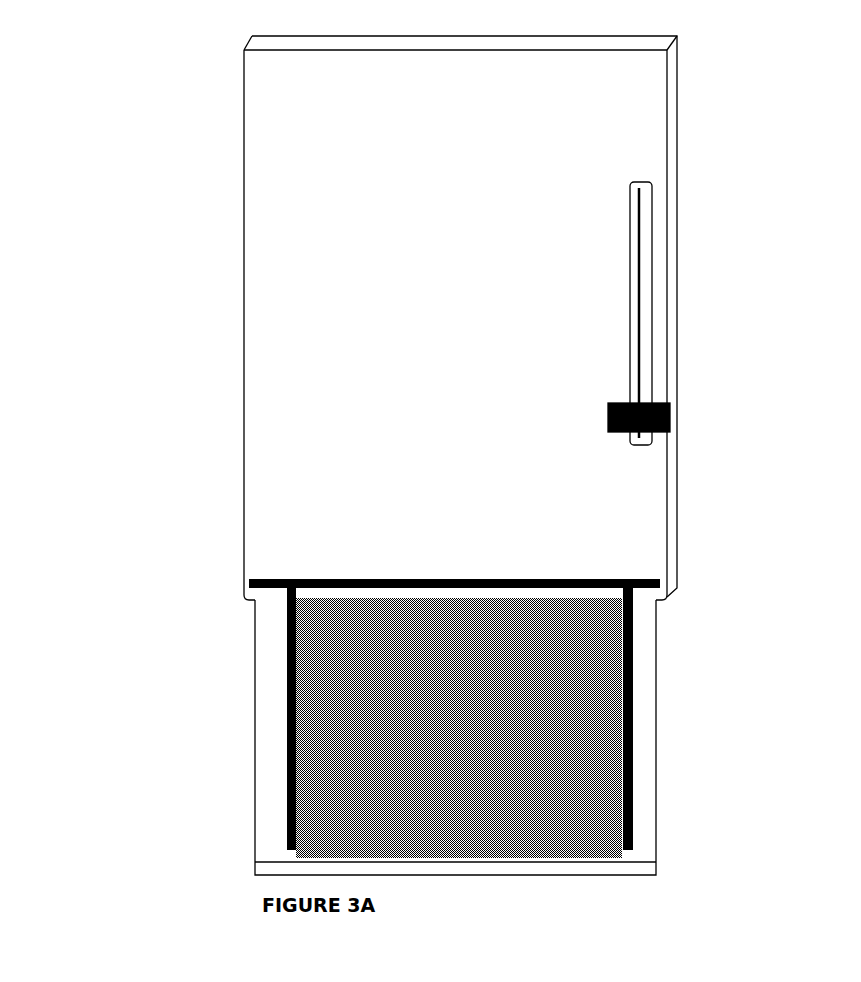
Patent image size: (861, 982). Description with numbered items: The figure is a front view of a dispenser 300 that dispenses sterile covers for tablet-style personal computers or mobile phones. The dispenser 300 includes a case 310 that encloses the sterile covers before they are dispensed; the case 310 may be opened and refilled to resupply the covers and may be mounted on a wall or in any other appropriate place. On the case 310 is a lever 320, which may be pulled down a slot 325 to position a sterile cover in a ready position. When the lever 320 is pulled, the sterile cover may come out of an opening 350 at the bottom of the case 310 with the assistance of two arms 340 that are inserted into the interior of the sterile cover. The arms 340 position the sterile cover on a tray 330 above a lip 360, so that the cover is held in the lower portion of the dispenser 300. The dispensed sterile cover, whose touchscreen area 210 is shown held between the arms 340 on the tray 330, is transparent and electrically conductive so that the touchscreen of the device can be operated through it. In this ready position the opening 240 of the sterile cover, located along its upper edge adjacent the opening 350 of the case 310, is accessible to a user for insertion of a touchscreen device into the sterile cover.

The dispenser 300 is at (752, 150).
The case 310 is at (457, 299).
The slot 325 is at (638, 324).
The lever 320 is at (670, 428).
The opening 240 is at (472, 598).
The tray 330 is at (648, 707).
The lip 360 is at (638, 870).
The arms 340 is at (290, 718).
The touchscreen area 210 is at (487, 726).
The opening 350 is at (268, 608).